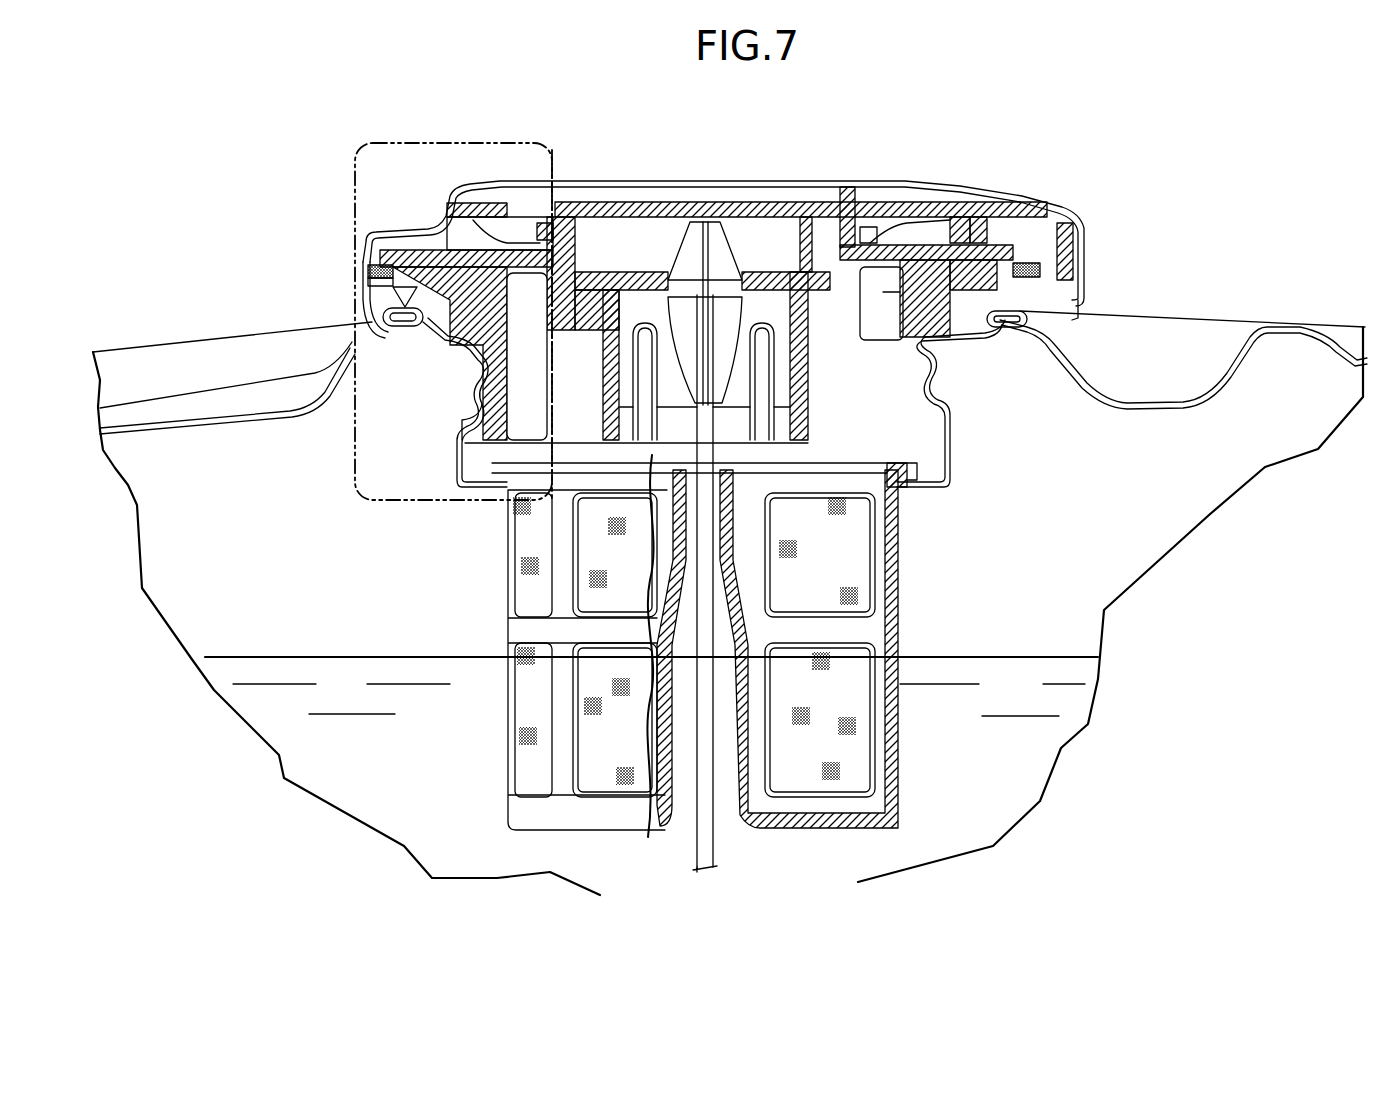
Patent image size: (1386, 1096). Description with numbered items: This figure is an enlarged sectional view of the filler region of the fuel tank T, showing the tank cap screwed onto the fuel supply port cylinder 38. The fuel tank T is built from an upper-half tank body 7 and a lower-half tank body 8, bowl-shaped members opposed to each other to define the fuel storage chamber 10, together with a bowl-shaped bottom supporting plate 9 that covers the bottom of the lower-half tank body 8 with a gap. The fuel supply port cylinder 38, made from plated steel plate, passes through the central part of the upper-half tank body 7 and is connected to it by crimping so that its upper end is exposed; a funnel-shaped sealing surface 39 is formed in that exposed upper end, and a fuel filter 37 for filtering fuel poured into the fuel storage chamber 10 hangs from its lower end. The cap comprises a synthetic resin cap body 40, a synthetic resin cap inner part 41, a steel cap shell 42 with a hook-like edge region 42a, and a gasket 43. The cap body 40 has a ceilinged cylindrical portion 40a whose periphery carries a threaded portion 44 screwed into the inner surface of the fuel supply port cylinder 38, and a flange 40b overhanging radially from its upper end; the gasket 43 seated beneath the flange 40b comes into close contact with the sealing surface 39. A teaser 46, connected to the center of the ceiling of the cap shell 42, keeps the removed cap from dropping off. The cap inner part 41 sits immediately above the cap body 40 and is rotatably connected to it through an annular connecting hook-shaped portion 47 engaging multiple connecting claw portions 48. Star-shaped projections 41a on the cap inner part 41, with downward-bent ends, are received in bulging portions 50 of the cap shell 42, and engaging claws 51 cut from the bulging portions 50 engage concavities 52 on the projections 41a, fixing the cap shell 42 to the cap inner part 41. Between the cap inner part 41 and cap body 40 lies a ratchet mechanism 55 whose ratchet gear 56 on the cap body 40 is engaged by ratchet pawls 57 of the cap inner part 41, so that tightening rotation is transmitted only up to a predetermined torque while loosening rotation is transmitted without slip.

The upper-half tank body 7 is at (1277, 328).
The lower-half tank body 8 is at (556, 157).
The bottom supporting plate 9 is at (350, 292).
The fuel storage chamber 10 is at (1002, 586).
The fuel filter 37 is at (900, 775).
The fuel supply port cylinder 38 is at (953, 424).
The sealing surface 39 is at (372, 302).
The cap body 40 is at (601, 305).
The cylindrical portion 40a is at (507, 370).
The flange 40b is at (420, 250).
The cap inner part 41 is at (840, 247).
The projections 41a is at (1077, 235).
The cap shell 42 is at (693, 237).
The sheet hook portion 42a is at (357, 257).
The gasket 43 is at (438, 328).
The threaded portion 44 is at (465, 423).
The teaser 46 is at (707, 843).
The annular connecting hook-shaped portion 47 is at (950, 222).
The connecting claw portions 48 is at (990, 238).
The bulging portions 50 is at (1087, 300).
The engaging claws 51 is at (1080, 247).
The concavities 52 is at (1073, 293).
The ratchet mechanism 55 is at (490, 158).
The ratchet gear 56 is at (543, 227).
The ratchet pawls 57 is at (483, 223).
The fuel tank T is at (1156, 539).